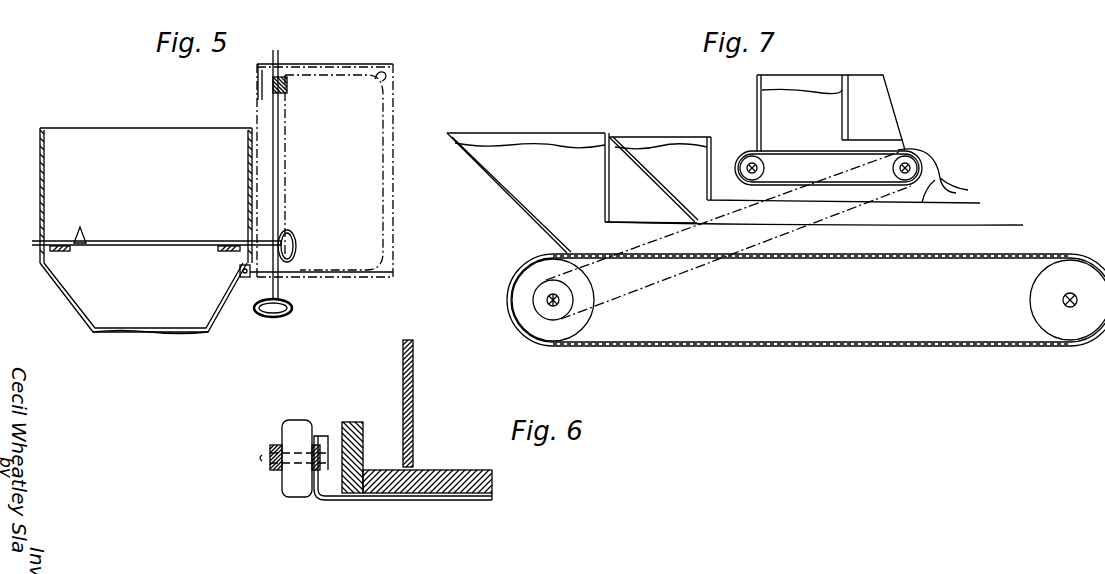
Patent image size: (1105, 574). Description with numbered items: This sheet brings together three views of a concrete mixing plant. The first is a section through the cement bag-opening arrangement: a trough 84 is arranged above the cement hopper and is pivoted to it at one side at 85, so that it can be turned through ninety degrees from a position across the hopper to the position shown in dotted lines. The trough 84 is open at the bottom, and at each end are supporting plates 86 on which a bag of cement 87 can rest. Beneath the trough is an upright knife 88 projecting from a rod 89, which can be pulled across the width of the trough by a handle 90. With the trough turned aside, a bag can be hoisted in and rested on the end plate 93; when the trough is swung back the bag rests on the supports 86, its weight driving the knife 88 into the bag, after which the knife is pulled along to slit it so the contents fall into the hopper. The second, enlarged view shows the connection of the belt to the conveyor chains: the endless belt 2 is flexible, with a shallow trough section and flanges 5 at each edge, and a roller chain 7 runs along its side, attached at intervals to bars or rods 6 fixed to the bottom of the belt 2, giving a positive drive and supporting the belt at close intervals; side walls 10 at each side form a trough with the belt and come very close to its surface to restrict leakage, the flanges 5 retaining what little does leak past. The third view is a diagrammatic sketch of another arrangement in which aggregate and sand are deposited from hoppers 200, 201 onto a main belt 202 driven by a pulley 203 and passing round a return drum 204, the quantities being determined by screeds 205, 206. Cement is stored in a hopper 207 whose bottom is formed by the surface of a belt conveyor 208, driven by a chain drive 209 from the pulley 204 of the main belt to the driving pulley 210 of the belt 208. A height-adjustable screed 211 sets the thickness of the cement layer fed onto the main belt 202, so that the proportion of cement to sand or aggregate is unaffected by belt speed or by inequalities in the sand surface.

In FIG. 5, the trough 84 is at (145, 140).
In FIG. 5, the pivot 85 is at (247, 278).
In FIG. 5, the supporting plates 86 is at (68, 253).
In FIG. 5, the bag of cement 87 is at (340, 100).
In FIG. 5, the upright knife 88 is at (82, 232).
In FIG. 5, the rod 89 is at (185, 241).
In FIG. 5, the handle 90 is at (298, 237).
In FIG. 5, the end plate 93 is at (250, 155).
In FIG. 6, the endless belt 2 is at (445, 474).
In FIG. 6, the flanges 5 is at (356, 430).
In FIG. 6, the bars or rods 6 is at (410, 501).
In FIG. 6, the roller chain 7 is at (294, 491).
In FIG. 6, the side walls 10 is at (413, 373).
In FIG. 7, the hopper 200 is at (556, 160).
In FIG. 7, the hopper 201 is at (667, 160).
In FIG. 7, the main belt 202 is at (835, 262).
In FIG. 7, the pulley 203 is at (1044, 291).
In FIG. 7, the return drum 204 is at (580, 315).
In FIG. 7, the screed 205 is at (609, 193).
In FIG. 7, the screed 206 is at (711, 146).
In FIG. 7, the hopper 207 is at (808, 105).
In FIG. 7, the belt conveyor 208 is at (828, 168).
In FIG. 7, the chain drive 209 is at (804, 223).
In FIG. 7, the driving pulley 210 is at (912, 168).
In FIG. 7, the screed 211 is at (850, 130).